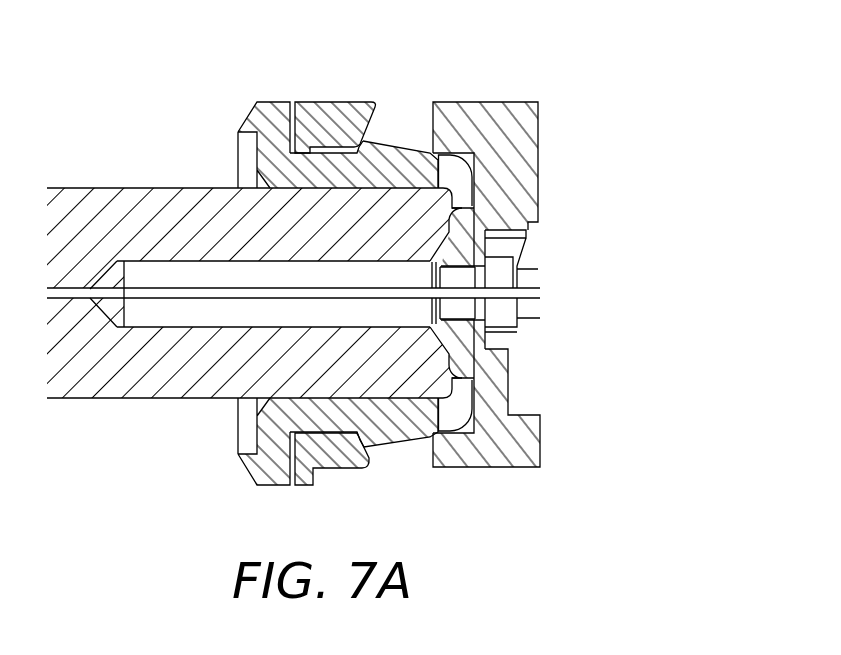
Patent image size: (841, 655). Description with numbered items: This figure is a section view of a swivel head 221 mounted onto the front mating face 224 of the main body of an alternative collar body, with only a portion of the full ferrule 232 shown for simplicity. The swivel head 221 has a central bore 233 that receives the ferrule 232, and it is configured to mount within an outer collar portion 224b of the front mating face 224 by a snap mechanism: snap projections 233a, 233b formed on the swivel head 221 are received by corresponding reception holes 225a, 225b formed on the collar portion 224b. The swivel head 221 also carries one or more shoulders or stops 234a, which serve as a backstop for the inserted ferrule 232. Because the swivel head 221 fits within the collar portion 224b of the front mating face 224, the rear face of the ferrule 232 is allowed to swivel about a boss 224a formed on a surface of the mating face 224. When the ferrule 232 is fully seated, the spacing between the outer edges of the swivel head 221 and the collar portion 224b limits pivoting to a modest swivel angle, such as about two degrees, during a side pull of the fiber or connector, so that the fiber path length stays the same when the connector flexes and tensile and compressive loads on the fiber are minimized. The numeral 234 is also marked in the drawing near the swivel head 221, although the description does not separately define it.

The ferrule 232 is at (101, 188).
The central bore 233 is at (260, 187).
The snap projection 233a is at (377, 433).
The snap projection 233b is at (383, 140).
The swivel head 221 is at (260, 113).
The front mating face 224 is at (352, 101).
The boss 224a is at (443, 251).
The outer collar portion 224b is at (313, 101).
The reception hole 225a is at (417, 455).
The reception hole 225b is at (430, 108).
The seal 234 is at (272, 102).
The shoulder or stop 234a is at (458, 183).